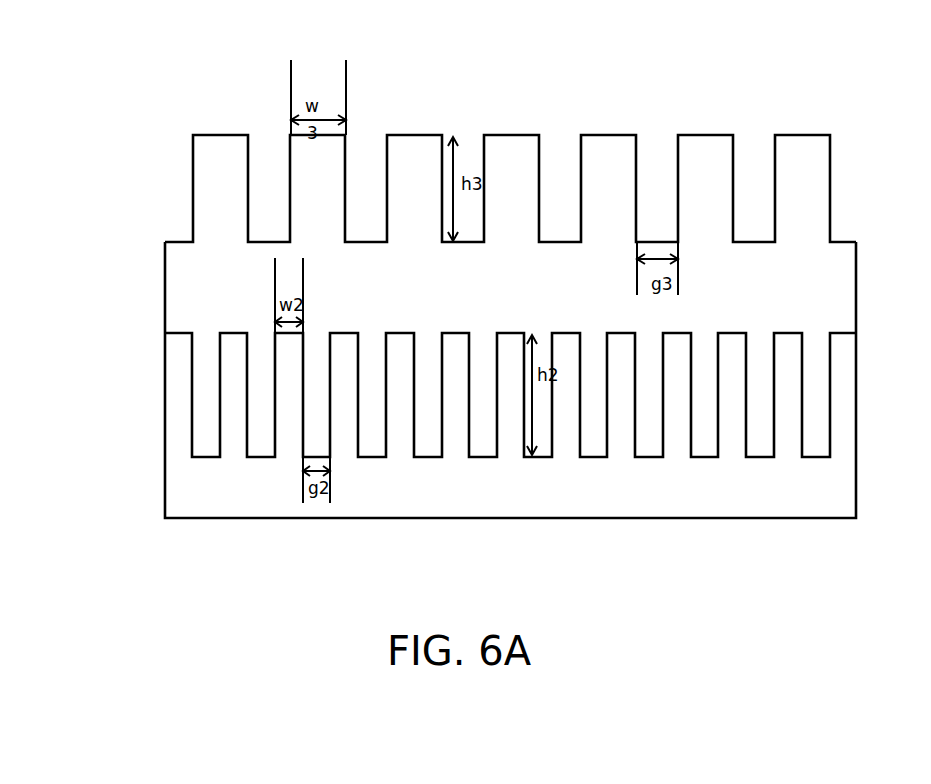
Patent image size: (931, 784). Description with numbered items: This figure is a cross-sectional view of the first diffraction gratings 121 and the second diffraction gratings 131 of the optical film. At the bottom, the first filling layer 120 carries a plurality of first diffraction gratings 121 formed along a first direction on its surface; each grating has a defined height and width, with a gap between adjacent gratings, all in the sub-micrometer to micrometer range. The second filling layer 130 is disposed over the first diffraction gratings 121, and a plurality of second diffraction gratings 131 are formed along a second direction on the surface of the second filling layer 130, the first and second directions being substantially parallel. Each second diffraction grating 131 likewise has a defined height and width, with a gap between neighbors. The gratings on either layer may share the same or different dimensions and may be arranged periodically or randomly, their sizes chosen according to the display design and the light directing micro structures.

The second diffraction gratings 131 is at (200, 188).
The second filling layer 130 is at (177, 302).
The first diffraction gratings 121 is at (178, 389).
The first filling layer 120 is at (178, 486).